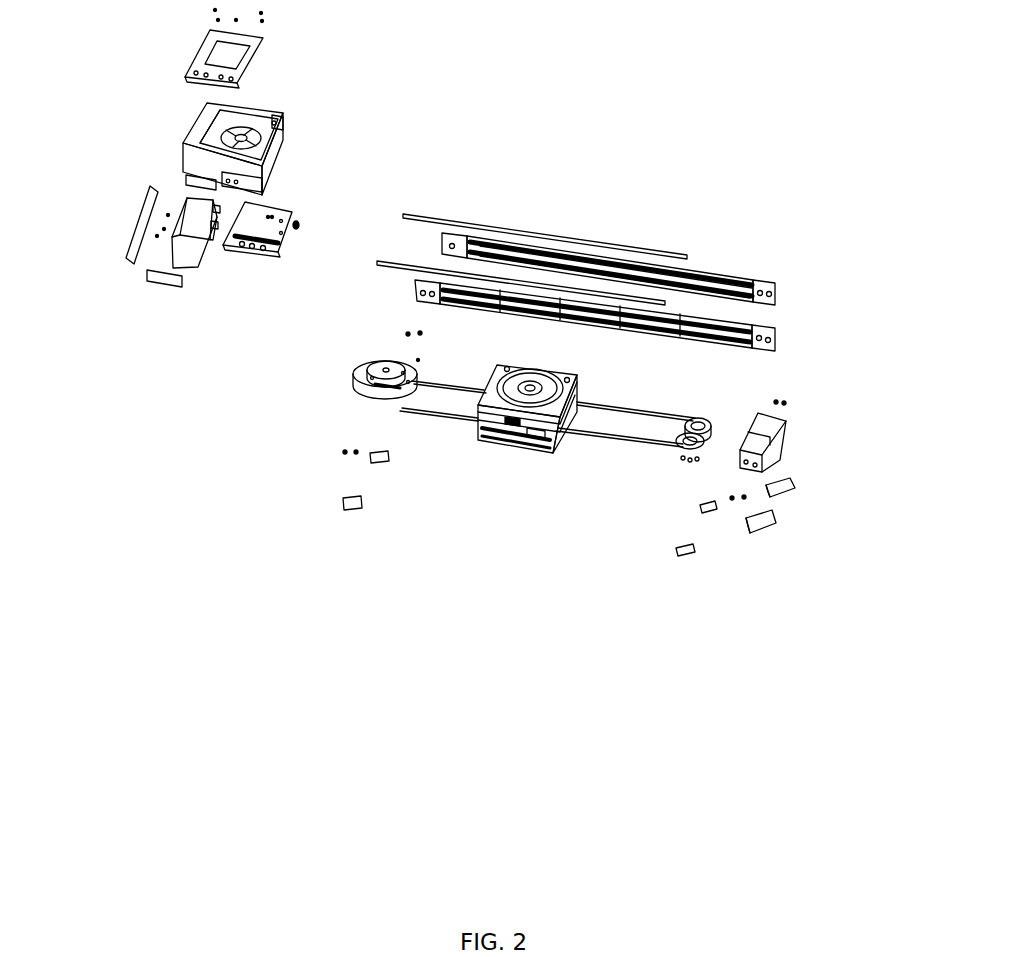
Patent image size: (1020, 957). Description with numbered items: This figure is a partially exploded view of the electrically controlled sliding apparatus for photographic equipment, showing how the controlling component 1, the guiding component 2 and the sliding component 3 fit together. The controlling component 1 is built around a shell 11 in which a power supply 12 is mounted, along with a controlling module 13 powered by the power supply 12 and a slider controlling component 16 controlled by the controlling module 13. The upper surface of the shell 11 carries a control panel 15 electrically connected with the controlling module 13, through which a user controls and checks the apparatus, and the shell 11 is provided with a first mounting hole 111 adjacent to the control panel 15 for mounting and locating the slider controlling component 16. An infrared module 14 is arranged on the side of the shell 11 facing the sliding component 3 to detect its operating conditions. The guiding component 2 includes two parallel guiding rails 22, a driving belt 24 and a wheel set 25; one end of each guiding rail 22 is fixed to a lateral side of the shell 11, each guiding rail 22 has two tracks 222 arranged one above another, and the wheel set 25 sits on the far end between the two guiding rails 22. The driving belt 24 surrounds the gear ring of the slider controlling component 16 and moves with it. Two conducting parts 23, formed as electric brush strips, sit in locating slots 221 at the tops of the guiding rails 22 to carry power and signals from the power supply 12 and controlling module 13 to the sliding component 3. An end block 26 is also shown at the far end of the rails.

The controlling component 1 is at (104, 296).
The guiding component 2 is at (590, 185).
The sliding component 3 is at (508, 460).
The shell 11 is at (227, 134).
The first mounting hole 111 is at (282, 116).
The power supply 12 is at (187, 203).
The controlling module 13 is at (255, 217).
The infrared module 14 is at (300, 225).
The control panel 15 is at (233, 48).
The slider controlling component 16 is at (377, 373).
The guiding rail 22 is at (633, 280).
The locating slot 221 is at (725, 270).
The tracks 222 is at (693, 280).
The conducting parts 23 is at (418, 227).
The driving belt 24 is at (630, 412).
The wheel set 25 is at (705, 422).
The end block 26 is at (787, 430).